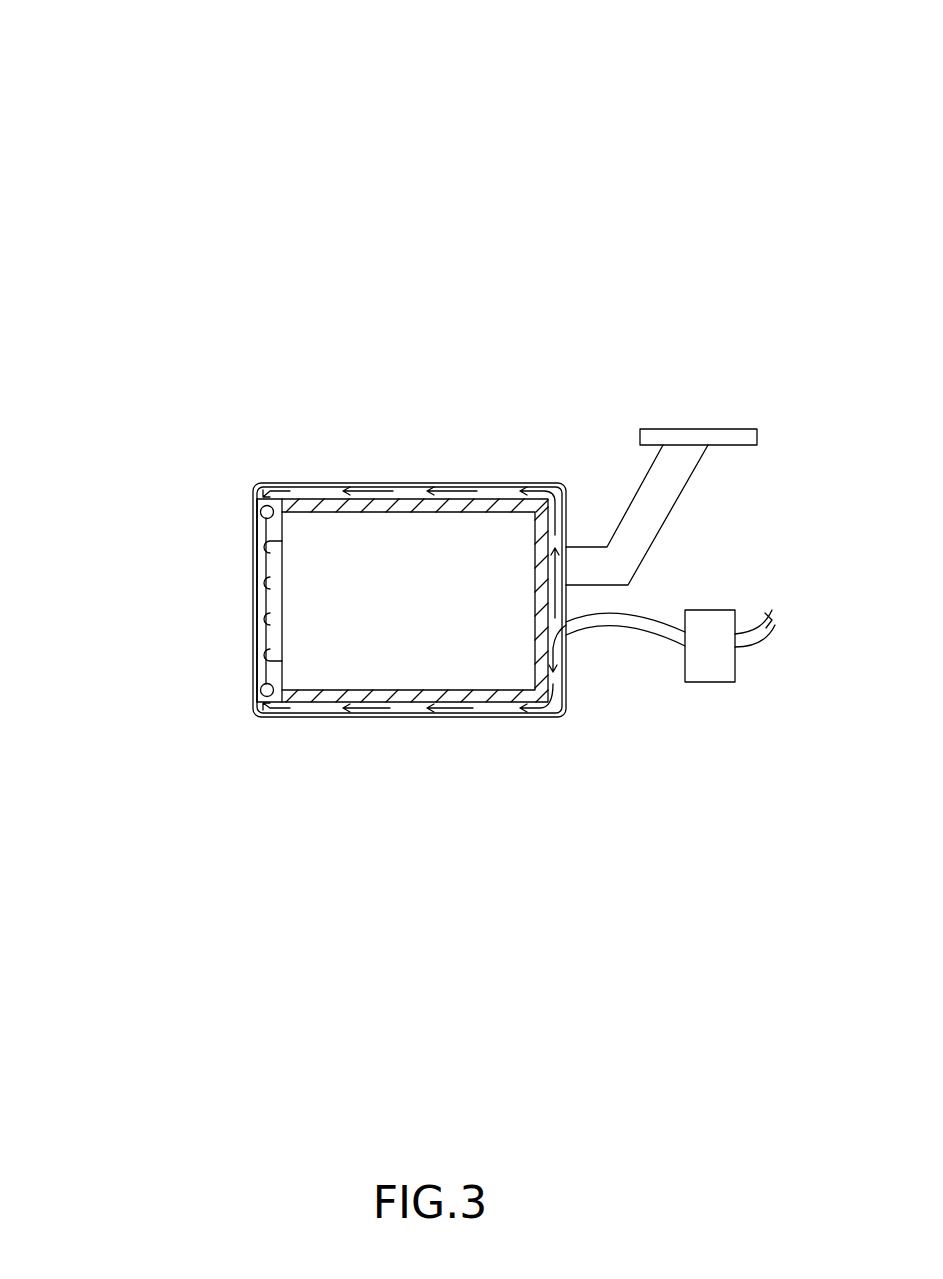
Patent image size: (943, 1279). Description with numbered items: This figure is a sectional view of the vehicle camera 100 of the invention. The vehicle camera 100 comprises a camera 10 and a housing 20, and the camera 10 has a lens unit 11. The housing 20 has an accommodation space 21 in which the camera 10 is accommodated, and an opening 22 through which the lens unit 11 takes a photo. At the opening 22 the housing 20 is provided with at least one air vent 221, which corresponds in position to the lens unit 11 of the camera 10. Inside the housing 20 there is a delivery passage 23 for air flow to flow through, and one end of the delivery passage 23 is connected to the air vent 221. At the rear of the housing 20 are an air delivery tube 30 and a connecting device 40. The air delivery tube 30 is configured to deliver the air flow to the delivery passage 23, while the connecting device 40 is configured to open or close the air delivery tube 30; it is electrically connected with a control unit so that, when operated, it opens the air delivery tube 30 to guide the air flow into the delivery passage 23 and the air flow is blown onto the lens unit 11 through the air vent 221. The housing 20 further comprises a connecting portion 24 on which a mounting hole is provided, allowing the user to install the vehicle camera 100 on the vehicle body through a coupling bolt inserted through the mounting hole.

The vehicle camera 100 is at (165, 140).
The camera 10 is at (485, 522).
The lens unit 11 is at (277, 637).
The housing 20 is at (408, 717).
The accommodation space 21 is at (289, 507).
The opening 22 is at (258, 602).
The air vent 221 is at (265, 511).
The delivery passage 23 is at (401, 496).
The connecting portion 24 is at (733, 437).
The air delivery tube 30 is at (615, 623).
The connecting device 40 is at (725, 673).